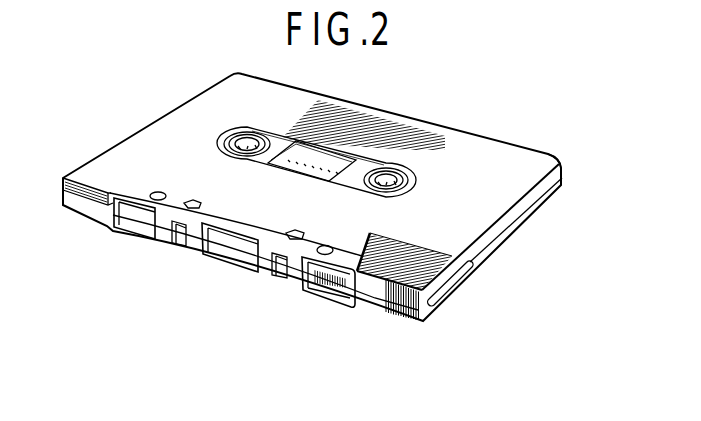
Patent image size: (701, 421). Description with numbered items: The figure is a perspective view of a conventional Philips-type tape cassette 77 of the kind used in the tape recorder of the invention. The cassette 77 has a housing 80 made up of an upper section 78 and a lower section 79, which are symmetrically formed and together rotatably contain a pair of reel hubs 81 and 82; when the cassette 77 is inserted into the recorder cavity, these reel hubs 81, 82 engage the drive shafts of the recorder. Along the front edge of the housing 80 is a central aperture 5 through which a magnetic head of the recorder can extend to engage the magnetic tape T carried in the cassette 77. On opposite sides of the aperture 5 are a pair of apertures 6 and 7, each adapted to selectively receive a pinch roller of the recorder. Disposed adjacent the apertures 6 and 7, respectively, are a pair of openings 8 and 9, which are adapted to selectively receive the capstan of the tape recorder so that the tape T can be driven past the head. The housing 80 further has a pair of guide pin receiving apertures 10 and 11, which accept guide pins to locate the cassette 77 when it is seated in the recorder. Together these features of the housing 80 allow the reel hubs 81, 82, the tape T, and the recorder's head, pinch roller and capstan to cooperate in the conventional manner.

The housing 80 is at (343, 98).
The cassette 77 is at (136, 134).
The upper section 78 is at (538, 161).
The lower section 79 is at (520, 224).
The reel hub 81 is at (247, 137).
The reel hub 82 is at (400, 175).
The opening 8 is at (158, 192).
The opening 9 is at (333, 248).
The guide pin receiving aperture 10 is at (200, 199).
The guide pin receiving aperture 11 is at (304, 230).
The aperture 5 is at (238, 262).
The aperture 6 is at (140, 228).
The aperture 7 is at (322, 290).
The magnetic tape T is at (347, 287).